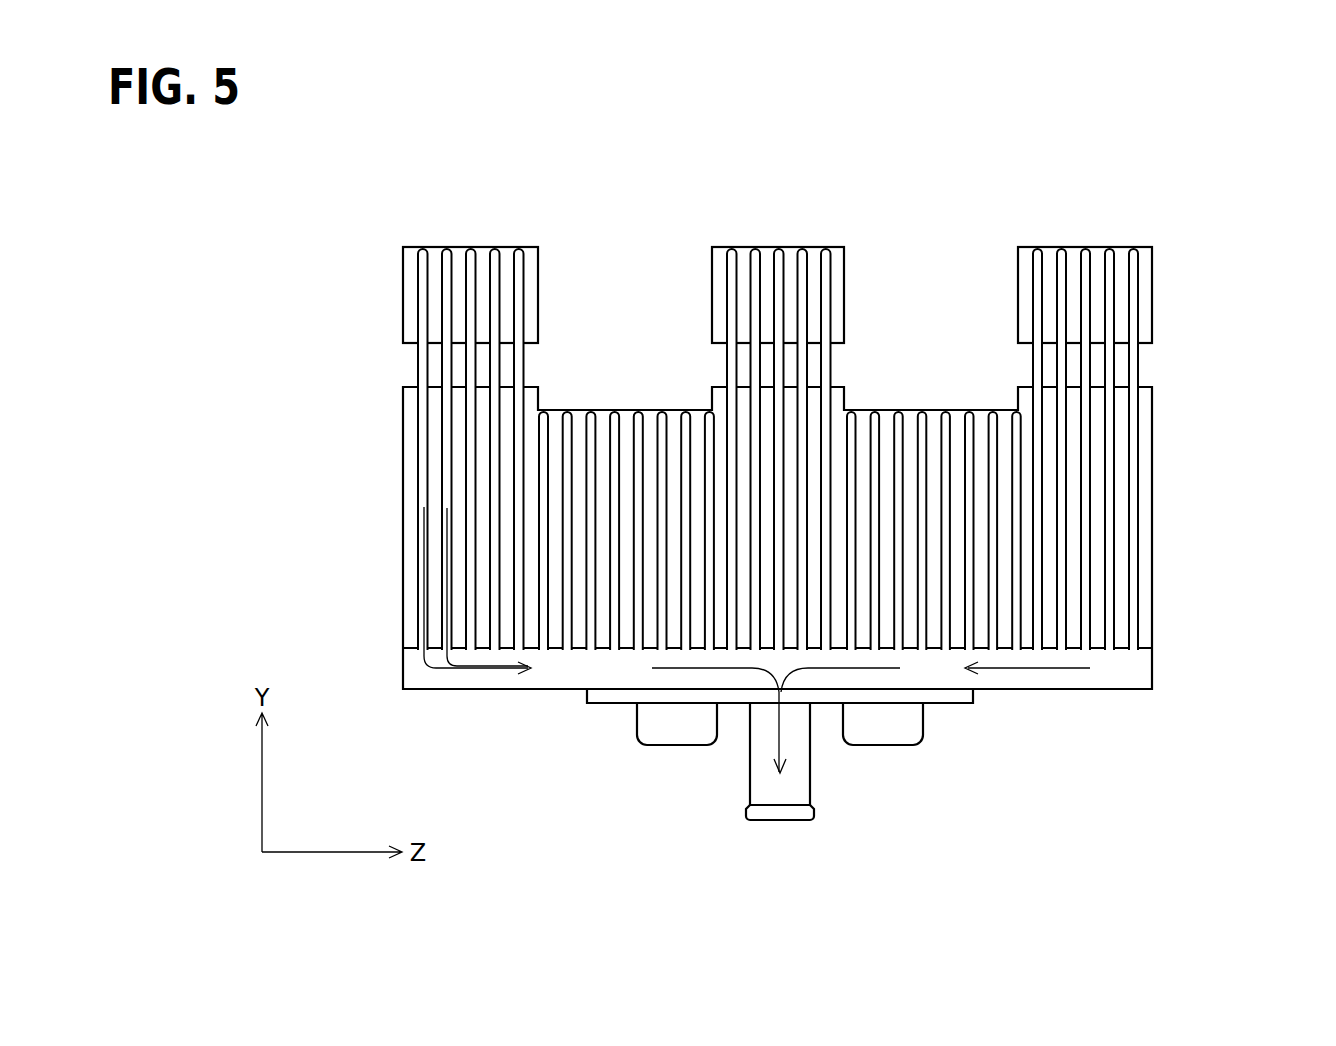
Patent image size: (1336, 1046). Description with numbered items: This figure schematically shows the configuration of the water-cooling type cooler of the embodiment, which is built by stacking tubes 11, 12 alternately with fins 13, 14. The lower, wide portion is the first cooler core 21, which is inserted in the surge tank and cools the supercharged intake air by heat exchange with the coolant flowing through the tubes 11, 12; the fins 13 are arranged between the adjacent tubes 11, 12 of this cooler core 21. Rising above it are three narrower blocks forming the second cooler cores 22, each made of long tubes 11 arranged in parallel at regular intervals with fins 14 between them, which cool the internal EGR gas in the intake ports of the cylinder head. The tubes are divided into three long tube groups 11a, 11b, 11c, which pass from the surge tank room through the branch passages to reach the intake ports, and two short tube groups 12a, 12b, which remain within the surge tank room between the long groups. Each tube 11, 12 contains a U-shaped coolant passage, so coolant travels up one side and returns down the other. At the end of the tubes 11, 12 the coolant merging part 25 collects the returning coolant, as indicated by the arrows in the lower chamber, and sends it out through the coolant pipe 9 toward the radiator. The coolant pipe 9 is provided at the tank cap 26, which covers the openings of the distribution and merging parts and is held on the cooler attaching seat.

The coolant pipe 9 is at (800, 790).
The tube 11 is at (831, 418).
The long tube group 11a is at (1138, 237).
The long tube group 11b is at (727, 237).
The long tube group 11c is at (418, 237).
The tube 12 is at (780, 561).
The short tube group 12a is at (1015, 408).
The short tube group 12b is at (542, 408).
The fin 13 is at (410, 578).
The fin 14 is at (410, 293).
The cooler core 21 is at (793, 545).
The cooler core 22 is at (777, 251).
The coolant merging part 25 is at (1080, 680).
The tank cap 26 is at (893, 737).